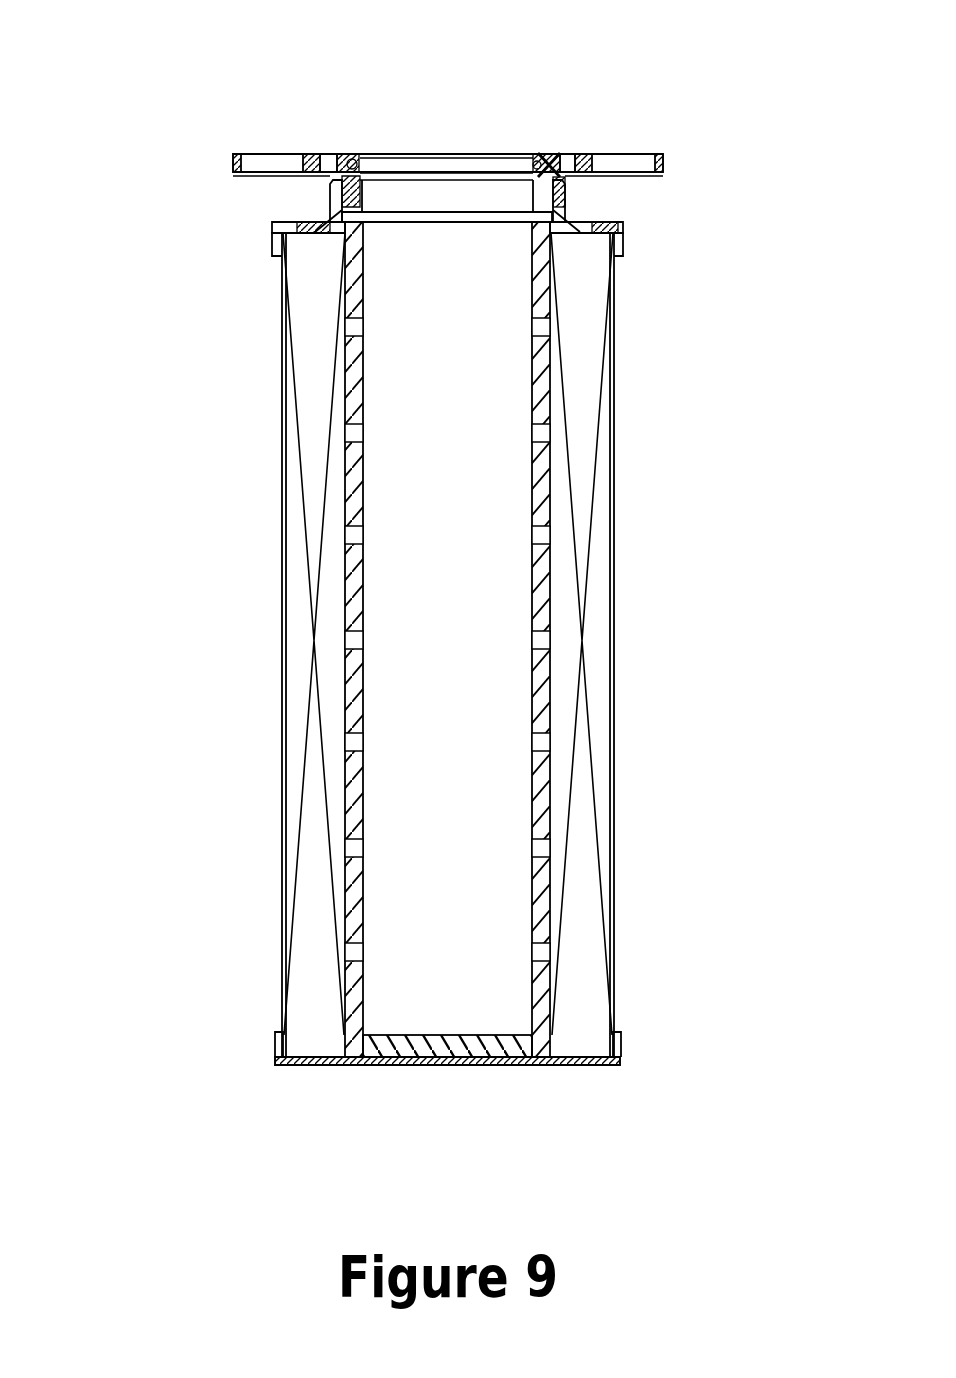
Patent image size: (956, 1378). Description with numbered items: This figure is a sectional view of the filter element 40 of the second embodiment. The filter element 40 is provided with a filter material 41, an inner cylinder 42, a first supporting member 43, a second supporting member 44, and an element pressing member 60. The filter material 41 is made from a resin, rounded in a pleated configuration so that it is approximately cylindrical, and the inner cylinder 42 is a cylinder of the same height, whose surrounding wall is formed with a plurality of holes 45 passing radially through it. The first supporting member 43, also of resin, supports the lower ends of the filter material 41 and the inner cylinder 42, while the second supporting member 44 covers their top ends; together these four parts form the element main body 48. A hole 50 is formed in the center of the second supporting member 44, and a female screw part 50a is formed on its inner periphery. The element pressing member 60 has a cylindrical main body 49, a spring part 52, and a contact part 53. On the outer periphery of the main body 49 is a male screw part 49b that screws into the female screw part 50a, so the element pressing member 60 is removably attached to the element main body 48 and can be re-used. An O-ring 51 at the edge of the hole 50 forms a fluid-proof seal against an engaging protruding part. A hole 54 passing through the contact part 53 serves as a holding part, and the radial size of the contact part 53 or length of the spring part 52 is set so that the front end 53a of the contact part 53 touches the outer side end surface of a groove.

The filter element 40 is at (453, 669).
The filter material 41 is at (606, 585).
The inner cylinder 42 is at (545, 705).
The first supporting member 43 is at (497, 1060).
The second supporting member 44 is at (624, 220).
The holes 45 is at (447, 645).
The element main body 48 is at (276, 666).
The main body 49 is at (357, 172).
The male screw part 49b is at (546, 150).
The hole 50 is at (476, 193).
The female screw part 50a is at (331, 183).
The O-ring 51 is at (356, 157).
The spring part 52 is at (327, 154).
The contact part 53 is at (306, 154).
The front end 53a is at (236, 160).
The hole 54 is at (265, 154).
The element pressing member 60 is at (555, 147).